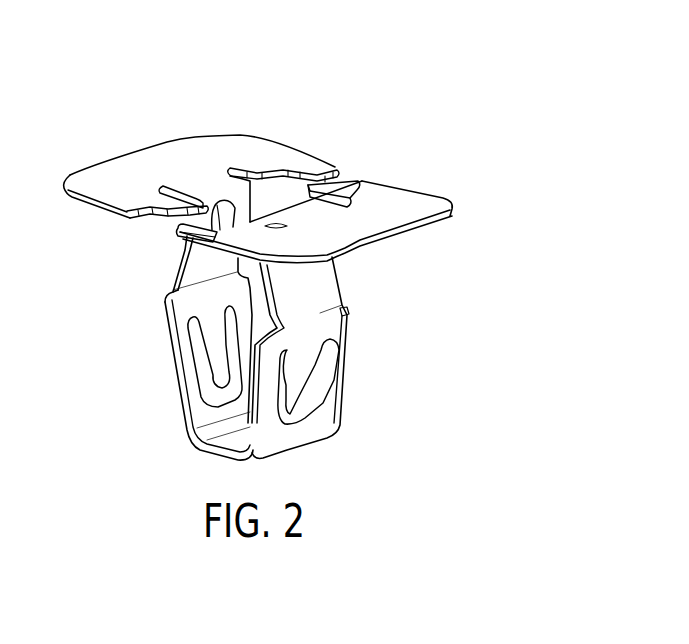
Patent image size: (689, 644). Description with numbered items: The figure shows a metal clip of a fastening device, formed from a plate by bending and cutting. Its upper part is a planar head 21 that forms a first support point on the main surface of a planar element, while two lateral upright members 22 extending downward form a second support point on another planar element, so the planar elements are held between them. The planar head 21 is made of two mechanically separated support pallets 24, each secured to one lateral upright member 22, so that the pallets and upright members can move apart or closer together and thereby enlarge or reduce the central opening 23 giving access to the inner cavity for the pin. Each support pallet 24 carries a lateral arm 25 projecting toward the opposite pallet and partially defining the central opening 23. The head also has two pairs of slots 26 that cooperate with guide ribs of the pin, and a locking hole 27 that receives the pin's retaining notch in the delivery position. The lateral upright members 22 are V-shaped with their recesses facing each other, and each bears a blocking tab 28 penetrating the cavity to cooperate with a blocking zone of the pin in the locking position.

The planar head 21 is at (463, 145).
The lateral upright members 22 is at (391, 252).
The central opening 23 is at (277, 193).
The support pallets 24 is at (183, 155).
The lateral arm 25 is at (336, 190).
The slots 26 is at (163, 190).
The locking hole 27 is at (210, 223).
The blocking tab 28 is at (227, 353).